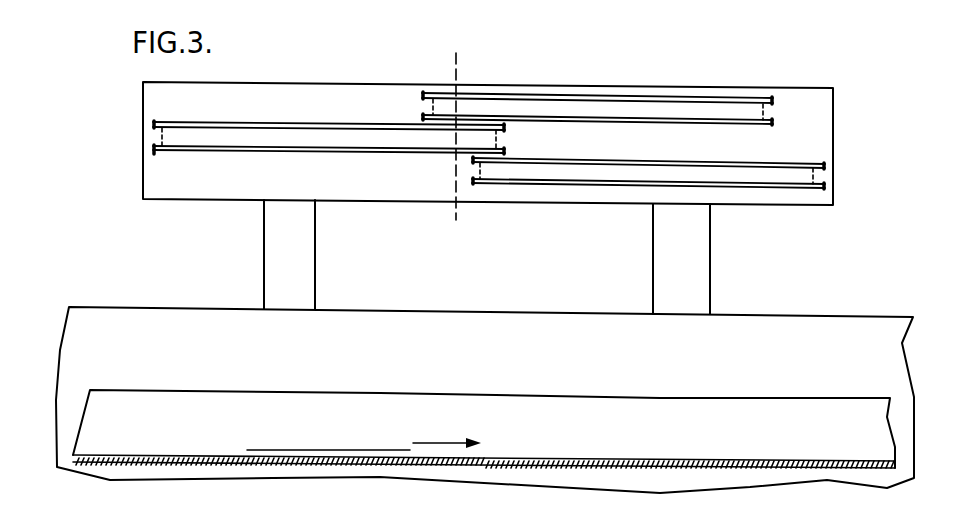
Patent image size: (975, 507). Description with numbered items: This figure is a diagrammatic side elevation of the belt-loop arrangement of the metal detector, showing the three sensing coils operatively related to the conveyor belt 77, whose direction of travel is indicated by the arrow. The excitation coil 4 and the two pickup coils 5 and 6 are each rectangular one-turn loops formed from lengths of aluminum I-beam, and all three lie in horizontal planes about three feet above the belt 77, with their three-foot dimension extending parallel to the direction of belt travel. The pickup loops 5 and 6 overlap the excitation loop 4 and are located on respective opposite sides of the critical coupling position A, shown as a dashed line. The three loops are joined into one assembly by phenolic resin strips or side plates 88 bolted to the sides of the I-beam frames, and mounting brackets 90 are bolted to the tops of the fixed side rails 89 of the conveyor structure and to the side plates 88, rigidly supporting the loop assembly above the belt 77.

The critical coupling position A is at (458, 73).
The strips of phenolic resin 88 is at (198, 188).
The excitation coil 4 is at (350, 122).
The pickup coil 5 is at (633, 102).
The pickup coil 6 is at (677, 167).
The mounting brackets 90 is at (307, 248).
The fixed side rails 89 is at (92, 310).
The conveyor belt 77 is at (580, 460).